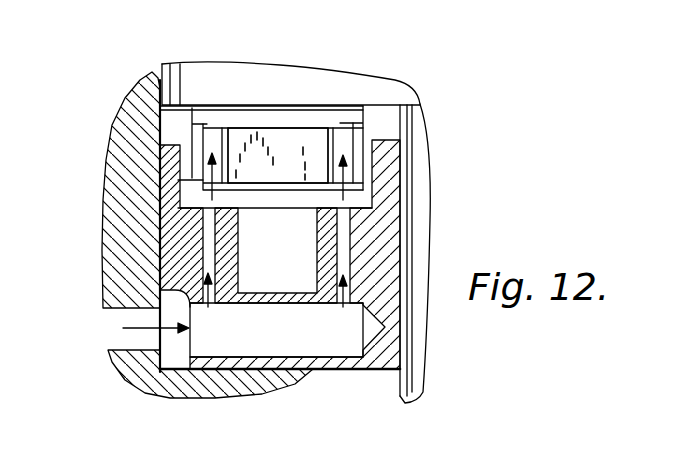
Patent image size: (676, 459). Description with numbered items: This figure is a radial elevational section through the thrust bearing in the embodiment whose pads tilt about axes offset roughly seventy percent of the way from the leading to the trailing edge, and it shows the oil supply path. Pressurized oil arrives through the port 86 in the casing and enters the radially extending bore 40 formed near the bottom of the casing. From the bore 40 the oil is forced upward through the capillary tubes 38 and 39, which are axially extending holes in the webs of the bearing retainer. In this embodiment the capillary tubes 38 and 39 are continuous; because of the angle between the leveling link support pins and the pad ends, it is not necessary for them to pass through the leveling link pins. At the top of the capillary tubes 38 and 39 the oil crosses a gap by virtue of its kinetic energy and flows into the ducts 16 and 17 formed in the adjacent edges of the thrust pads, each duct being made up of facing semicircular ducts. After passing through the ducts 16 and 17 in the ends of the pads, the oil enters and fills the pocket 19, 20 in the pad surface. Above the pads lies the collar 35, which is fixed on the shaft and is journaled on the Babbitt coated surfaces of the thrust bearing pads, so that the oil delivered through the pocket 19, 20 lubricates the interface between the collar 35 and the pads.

The duct 16 is at (342, 130).
The duct 17 is at (208, 128).
The pocket 19 is at (267, 117).
The pocket 20 is at (267, 117).
The collar 35 is at (388, 84).
The capillary tube 38 is at (207, 235).
The capillary tube 39 is at (343, 240).
The radial bore 40 is at (347, 310).
The port 86 is at (110, 318).